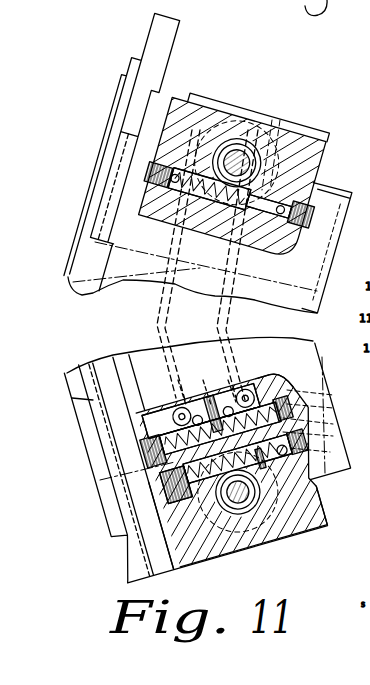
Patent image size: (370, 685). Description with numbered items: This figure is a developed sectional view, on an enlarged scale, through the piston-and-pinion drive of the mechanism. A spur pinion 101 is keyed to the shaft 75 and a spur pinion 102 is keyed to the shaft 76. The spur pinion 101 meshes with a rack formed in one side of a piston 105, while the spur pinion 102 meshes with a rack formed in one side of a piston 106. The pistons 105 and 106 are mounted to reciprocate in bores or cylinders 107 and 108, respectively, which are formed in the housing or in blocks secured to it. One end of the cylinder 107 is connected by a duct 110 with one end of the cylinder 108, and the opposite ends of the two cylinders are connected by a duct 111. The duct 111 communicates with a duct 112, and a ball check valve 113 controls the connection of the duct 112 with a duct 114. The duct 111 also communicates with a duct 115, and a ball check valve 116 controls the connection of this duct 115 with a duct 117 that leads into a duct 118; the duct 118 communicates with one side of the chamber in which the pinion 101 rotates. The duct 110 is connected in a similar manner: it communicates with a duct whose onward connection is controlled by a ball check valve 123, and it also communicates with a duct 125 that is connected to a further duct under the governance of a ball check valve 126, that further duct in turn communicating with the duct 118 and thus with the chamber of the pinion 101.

The shaft 75 is at (248, 518).
The shaft 76 is at (247, 133).
The spur pinion 101 is at (282, 538).
The spur pinion 102 is at (273, 130).
The piston 105 is at (158, 525).
The piston 106 is at (230, 200).
The cylinder 107 is at (283, 455).
The cylinder 108 is at (322, 170).
The duct 110 is at (229, 329).
The duct 111 is at (153, 323).
The duct 112 is at (178, 419).
The ball check valve 113 is at (177, 416).
The duct 114 is at (179, 383).
The duct 115 is at (172, 443).
The ball check valve 116 is at (207, 399).
The duct 117 is at (204, 383).
The duct 118 is at (150, 476).
The ball check valve 123 is at (258, 383).
The duct 125 is at (294, 368).
The ball check valve 126 is at (231, 382).